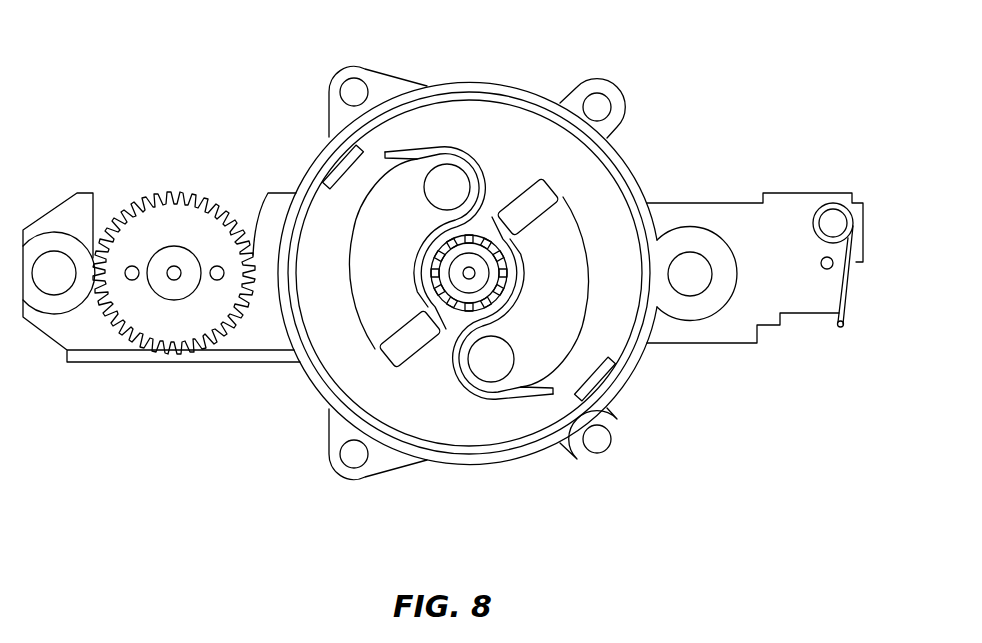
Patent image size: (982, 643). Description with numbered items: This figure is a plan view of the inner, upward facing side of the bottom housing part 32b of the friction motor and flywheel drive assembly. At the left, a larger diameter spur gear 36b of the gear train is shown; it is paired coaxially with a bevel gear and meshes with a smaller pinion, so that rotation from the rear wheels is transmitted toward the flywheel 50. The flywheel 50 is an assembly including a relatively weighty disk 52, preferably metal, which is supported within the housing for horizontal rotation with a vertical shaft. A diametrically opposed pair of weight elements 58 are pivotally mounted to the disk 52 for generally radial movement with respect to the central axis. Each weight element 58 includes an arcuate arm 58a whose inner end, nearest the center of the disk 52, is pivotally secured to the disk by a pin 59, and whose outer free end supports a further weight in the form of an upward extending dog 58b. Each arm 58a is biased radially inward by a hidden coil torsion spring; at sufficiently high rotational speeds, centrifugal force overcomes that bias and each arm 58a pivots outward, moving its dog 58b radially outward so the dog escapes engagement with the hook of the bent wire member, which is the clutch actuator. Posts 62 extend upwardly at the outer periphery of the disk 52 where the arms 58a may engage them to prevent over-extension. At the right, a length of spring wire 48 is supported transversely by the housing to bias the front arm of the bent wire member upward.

The bottom housing part 32b is at (720, 198).
The spur gear 36b is at (168, 223).
The spring wire 48 is at (850, 312).
The flywheel 50 is at (413, 441).
The disk 52 is at (494, 130).
The weight element 58 is at (354, 237).
The arcuate arm 58a is at (410, 297).
The dog 58b is at (385, 352).
The pin 59 is at (447, 178).
The post 62 is at (332, 171).